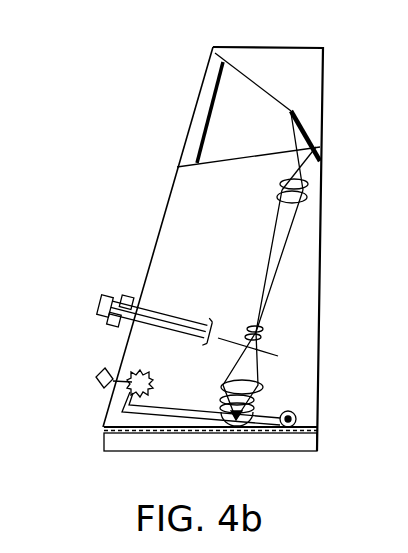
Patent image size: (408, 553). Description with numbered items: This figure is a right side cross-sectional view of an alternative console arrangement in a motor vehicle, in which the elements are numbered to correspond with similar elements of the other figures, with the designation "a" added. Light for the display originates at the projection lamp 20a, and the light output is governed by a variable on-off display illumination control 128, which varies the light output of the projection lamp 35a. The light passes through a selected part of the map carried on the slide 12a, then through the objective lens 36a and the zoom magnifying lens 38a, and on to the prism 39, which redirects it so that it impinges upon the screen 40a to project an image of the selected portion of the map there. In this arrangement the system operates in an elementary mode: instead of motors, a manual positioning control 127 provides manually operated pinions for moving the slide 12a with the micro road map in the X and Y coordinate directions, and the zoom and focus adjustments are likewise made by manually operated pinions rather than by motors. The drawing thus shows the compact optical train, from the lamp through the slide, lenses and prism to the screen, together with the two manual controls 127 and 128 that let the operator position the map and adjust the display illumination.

The screen 40a is at (208, 103).
The prism 39 is at (322, 138).
The zoom magnifying lens 38a is at (304, 200).
The objective lens 36a is at (266, 336).
The slide 12a is at (278, 356).
The projection lamp 35a is at (253, 404).
The projection lamp 20a is at (236, 420).
The manual positioning control 127 is at (97, 303).
The variable on-off display illumination control 128 is at (94, 388).